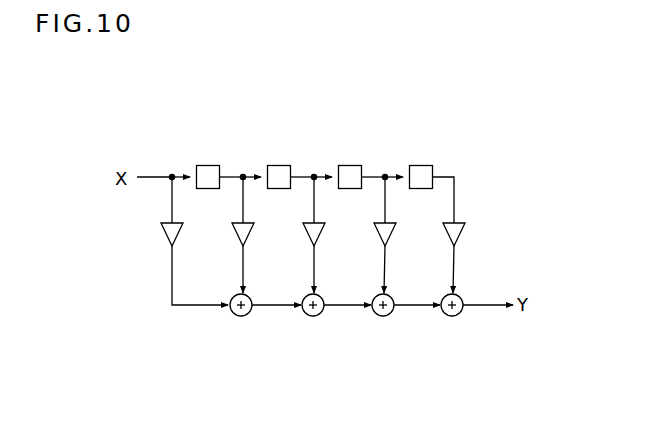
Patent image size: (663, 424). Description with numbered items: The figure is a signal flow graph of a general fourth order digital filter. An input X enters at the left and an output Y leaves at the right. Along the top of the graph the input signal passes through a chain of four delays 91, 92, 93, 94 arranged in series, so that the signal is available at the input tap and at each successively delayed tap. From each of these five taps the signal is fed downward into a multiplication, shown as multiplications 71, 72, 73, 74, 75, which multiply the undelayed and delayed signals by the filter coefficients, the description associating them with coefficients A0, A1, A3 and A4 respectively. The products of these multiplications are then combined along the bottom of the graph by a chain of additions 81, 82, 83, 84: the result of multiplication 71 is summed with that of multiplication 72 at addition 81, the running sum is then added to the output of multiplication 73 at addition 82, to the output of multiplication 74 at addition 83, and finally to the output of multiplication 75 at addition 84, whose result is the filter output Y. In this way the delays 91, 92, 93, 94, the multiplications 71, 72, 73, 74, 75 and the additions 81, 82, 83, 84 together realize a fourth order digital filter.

The multiplication 71 is at (166, 236).
The multiplication 72 is at (238, 236).
The multiplication 73 is at (309, 236).
The multiplication 74 is at (379, 237).
The multiplication 75 is at (449, 239).
The addition 81 is at (241, 316).
The addition 82 is at (313, 316).
The addition 83 is at (383, 316).
The addition 84 is at (452, 316).
The delay 91 is at (209, 165).
The delay 92 is at (281, 165).
The delay 93 is at (353, 165).
The delay 94 is at (426, 165).